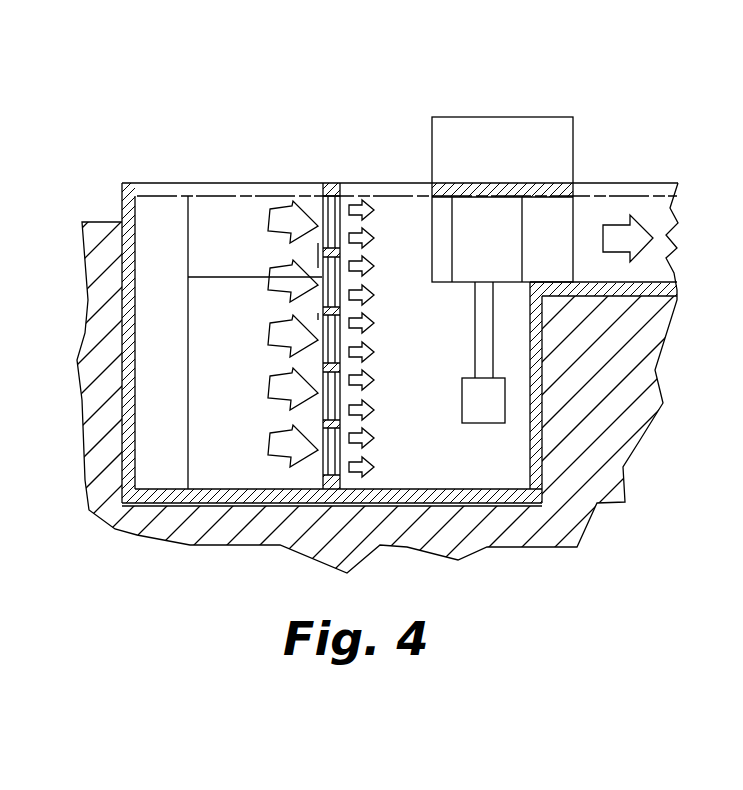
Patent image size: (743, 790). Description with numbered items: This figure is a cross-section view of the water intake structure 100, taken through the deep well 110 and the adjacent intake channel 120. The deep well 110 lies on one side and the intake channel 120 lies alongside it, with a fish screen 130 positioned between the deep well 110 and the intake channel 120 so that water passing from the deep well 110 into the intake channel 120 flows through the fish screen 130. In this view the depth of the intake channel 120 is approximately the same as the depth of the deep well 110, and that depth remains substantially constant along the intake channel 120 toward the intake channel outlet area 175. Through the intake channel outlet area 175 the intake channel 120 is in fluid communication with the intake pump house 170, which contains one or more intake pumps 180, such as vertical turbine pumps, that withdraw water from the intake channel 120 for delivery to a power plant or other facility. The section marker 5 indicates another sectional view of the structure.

The water intake structure 100 is at (262, 122).
The deep well 110 is at (207, 305).
The intake channel 120 is at (413, 232).
The fish screen 130 is at (338, 197).
The intake pump house 170 is at (533, 117).
The intake channel outlet area 175 is at (400, 460).
The intake pumps 180 is at (483, 402).
The section line for FIG. 5 is at (308, 252).